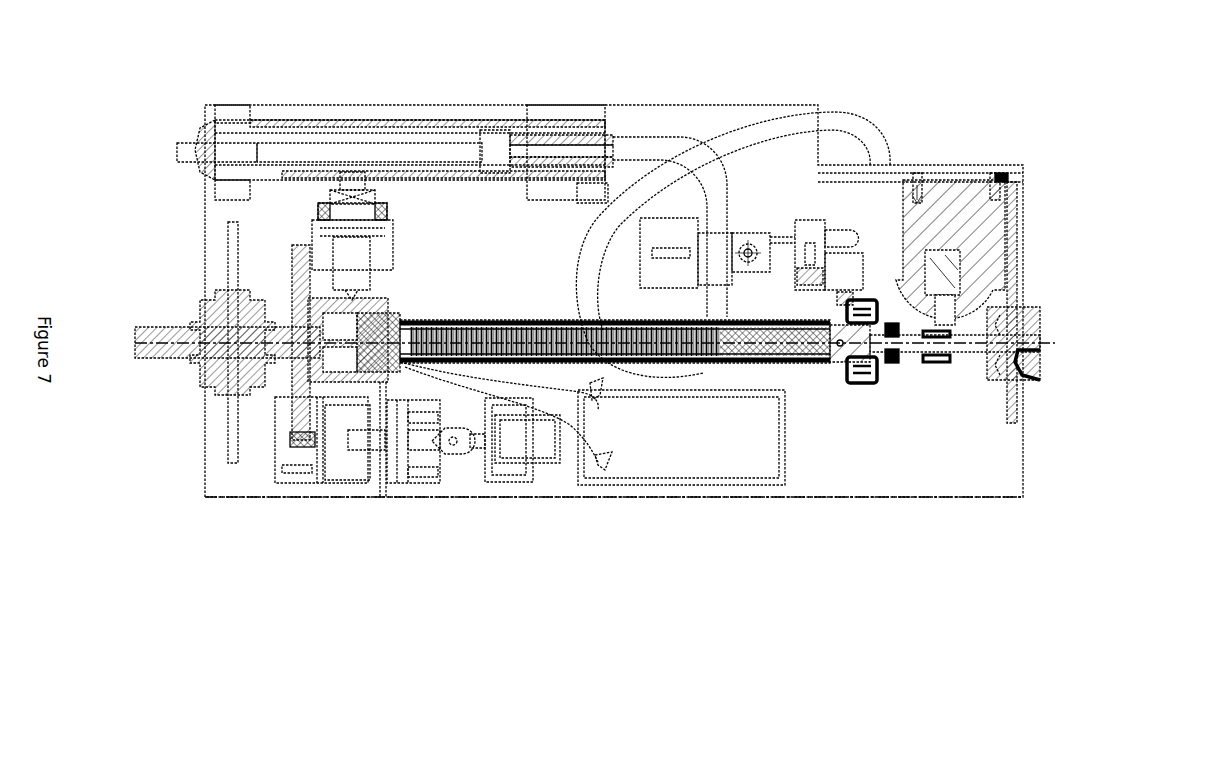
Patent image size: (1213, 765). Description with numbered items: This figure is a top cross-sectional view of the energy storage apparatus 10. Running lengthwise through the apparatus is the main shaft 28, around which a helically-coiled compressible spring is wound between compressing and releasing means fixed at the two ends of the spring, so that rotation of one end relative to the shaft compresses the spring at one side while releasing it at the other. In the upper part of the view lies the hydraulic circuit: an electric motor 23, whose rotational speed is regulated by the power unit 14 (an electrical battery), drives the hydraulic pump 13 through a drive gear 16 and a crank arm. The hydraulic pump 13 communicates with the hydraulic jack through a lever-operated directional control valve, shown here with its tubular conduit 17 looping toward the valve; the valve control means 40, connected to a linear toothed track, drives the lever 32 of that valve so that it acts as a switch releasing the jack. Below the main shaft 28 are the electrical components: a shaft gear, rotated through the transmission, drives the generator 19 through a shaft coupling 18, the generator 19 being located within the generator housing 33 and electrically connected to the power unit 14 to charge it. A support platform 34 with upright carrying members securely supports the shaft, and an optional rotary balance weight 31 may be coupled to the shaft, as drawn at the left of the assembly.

The energy storage apparatus 10 is at (763, 230).
The hydraulic pump 13 is at (278, 150).
The power unit 14 is at (647, 436).
The drive gear 16 is at (376, 204).
The tubular conduit 17 is at (843, 135).
The shaft coupling 18 is at (448, 453).
The generator 19 is at (537, 454).
The electric motor 23 is at (342, 247).
The main shaft 28 is at (748, 349).
The rotary balance weight 31 is at (357, 444).
The lever 32 is at (843, 235).
The generator housing 33 is at (488, 463).
The support platform 34 is at (330, 475).
The valve control means 40 is at (808, 228).